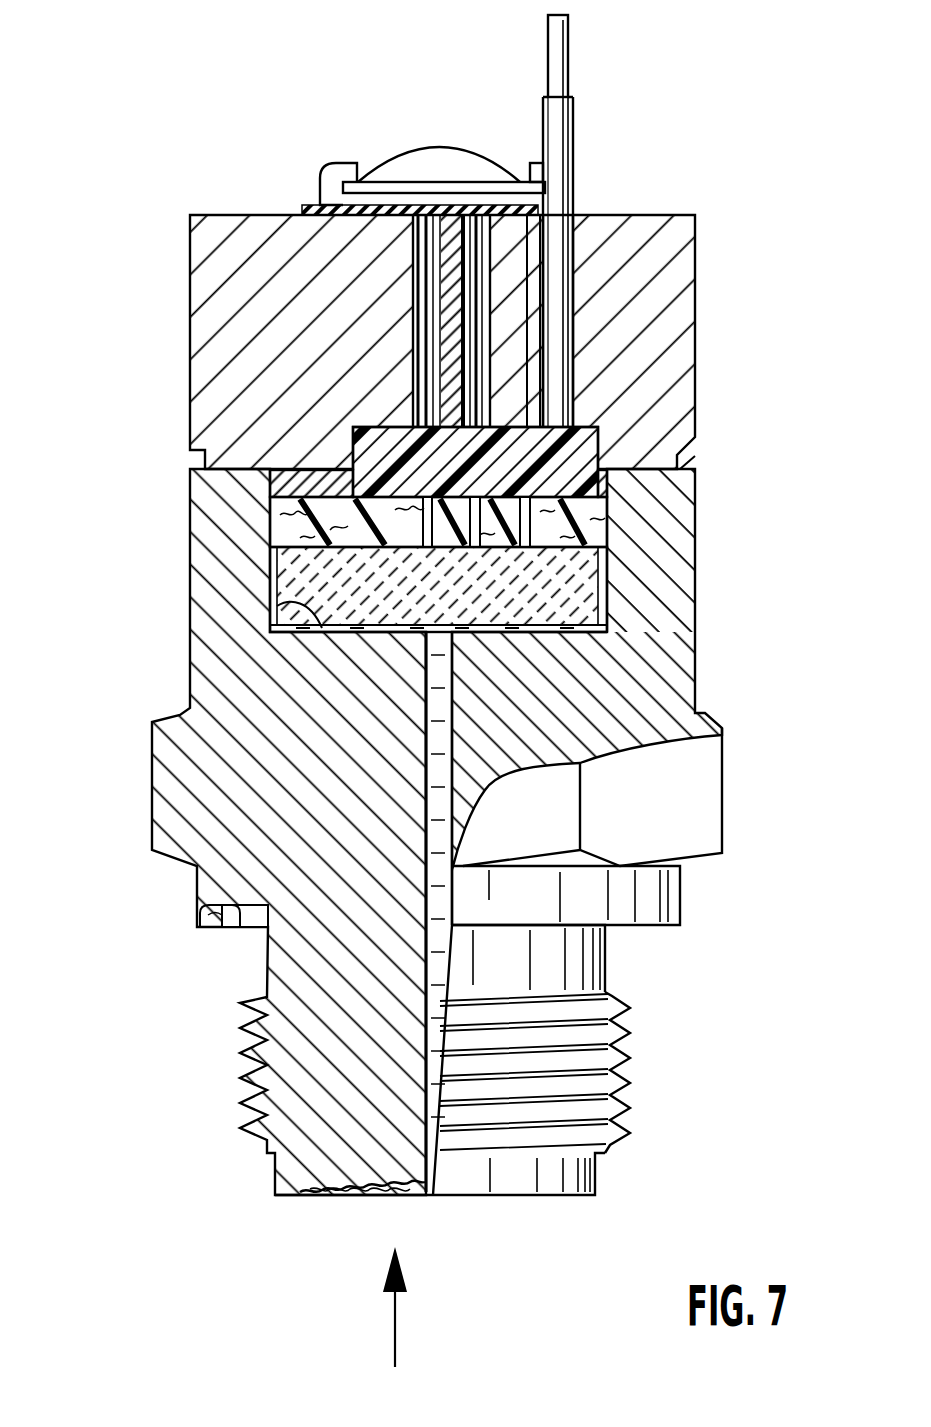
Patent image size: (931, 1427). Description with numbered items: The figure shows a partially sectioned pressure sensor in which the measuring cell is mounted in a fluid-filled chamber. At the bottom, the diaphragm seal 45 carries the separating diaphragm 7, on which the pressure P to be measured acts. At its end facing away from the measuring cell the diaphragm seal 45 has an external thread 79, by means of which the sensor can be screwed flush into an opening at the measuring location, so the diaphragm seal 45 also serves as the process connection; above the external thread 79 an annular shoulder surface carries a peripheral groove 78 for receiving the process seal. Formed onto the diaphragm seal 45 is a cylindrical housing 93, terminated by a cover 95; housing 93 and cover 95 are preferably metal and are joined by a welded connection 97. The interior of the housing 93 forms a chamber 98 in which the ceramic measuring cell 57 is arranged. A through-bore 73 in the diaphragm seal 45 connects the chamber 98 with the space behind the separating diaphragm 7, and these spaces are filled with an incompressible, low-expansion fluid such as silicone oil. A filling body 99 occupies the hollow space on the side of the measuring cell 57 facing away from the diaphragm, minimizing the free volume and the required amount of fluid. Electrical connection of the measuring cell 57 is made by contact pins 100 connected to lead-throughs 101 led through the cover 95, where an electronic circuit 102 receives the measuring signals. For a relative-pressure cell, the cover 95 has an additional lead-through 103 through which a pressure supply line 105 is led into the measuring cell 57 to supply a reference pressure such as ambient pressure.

The cylindrical housing 93 is at (694, 546).
The cover 95 is at (237, 248).
The welded connection 97 is at (188, 450).
The filling body 99 is at (273, 528).
The ceramic measuring cell 57 is at (272, 596).
The chamber 98 is at (272, 609).
The contact pins 100 is at (500, 548).
The lead-throughs 101 is at (433, 372).
The electronic circuit 102 is at (408, 184).
The additional lead-through 103 is at (582, 270).
The pressure supply line 105 is at (555, 62).
The diaphragm seal 45 is at (200, 808).
The peripheral groove 78 is at (198, 912).
The through-bore 73 is at (422, 922).
The external thread 79 is at (622, 1130).
The separating diaphragm 7 is at (344, 1196).
The pressure P is at (394, 1335).